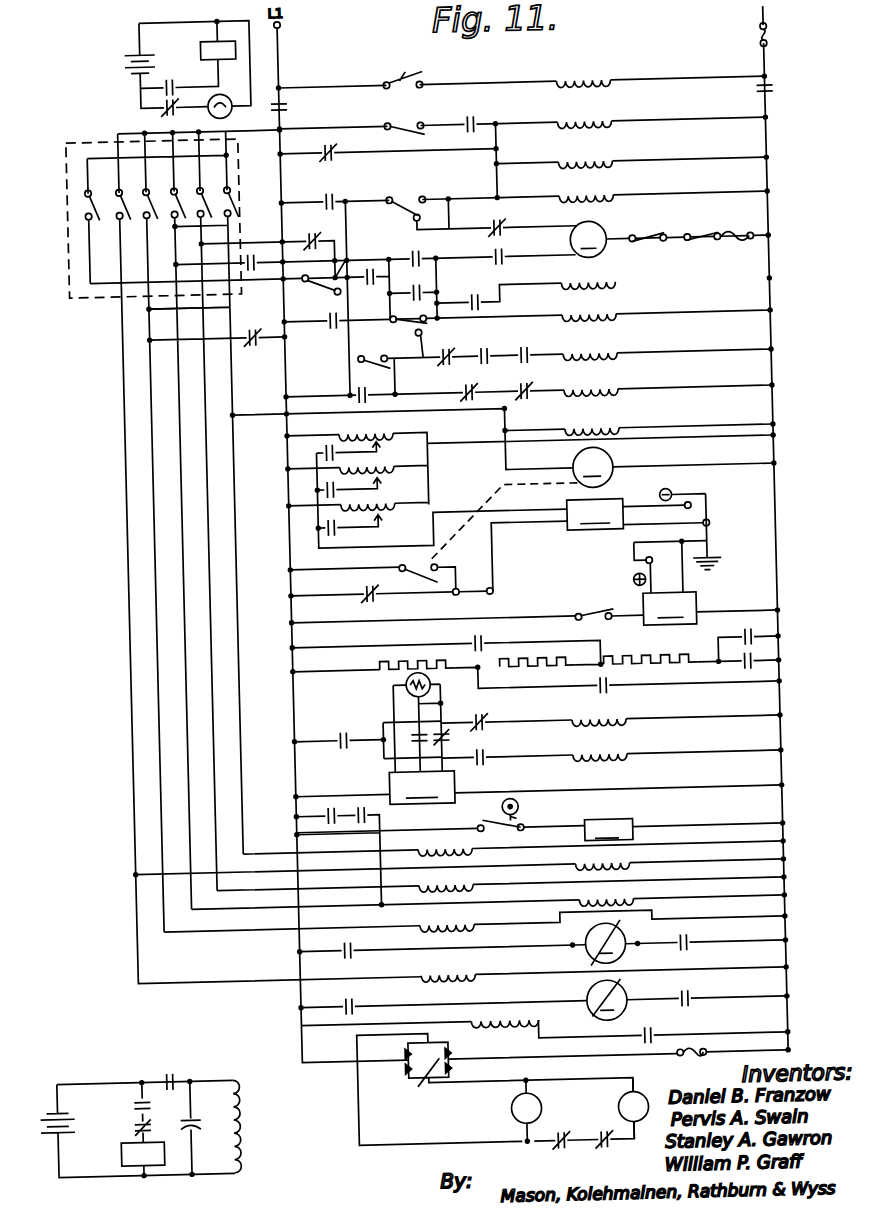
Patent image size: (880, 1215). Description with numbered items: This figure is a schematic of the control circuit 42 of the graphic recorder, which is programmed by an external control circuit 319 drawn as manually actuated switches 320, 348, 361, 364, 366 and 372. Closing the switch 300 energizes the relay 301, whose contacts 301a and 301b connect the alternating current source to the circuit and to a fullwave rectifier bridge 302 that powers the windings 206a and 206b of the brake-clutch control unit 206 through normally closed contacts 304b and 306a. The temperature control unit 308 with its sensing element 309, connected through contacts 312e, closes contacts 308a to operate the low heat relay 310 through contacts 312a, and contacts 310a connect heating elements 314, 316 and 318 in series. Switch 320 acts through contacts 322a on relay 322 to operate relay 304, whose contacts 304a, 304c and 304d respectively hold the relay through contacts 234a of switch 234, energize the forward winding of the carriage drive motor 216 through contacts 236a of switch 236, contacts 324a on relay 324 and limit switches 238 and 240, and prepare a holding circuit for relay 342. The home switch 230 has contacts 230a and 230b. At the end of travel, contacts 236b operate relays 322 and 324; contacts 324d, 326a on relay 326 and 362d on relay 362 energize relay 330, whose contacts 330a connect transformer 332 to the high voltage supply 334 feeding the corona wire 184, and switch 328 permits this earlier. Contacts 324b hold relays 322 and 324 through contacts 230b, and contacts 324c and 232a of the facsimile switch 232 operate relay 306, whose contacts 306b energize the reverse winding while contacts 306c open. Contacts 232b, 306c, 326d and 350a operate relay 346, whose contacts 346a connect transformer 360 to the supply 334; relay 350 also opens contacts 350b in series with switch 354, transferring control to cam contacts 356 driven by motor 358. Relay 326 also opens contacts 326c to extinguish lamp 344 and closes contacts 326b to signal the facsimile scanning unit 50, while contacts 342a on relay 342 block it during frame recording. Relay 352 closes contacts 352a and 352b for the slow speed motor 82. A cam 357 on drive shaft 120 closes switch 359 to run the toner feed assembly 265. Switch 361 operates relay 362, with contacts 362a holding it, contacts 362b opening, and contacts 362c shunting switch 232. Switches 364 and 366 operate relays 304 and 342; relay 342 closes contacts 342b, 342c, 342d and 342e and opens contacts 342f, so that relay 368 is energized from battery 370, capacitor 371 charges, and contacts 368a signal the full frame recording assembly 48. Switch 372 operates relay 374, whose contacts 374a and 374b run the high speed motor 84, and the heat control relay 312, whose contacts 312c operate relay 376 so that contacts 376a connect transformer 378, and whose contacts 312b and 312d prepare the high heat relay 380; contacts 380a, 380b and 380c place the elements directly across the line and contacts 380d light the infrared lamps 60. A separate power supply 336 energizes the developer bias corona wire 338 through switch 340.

The control circuit 42 is at (76, 68).
The normally open contacts 326b is at (169, 79).
The facsimile scanning unit 50 is at (217, 50).
The normally closed contacts 326c is at (161, 106).
The lamp 344 is at (227, 113).
The switch 320 is at (82, 190).
The switch 372 is at (130, 196).
The switch 348 is at (156, 196).
The switch 366 is at (183, 195).
The switch 361 is at (209, 194).
The switch 364 is at (231, 200).
The external control circuit 319 is at (80, 298).
The contacts 342b is at (239, 259).
The normally closed contacts 362b is at (280, 290).
The normally closed contacts 342a is at (245, 344).
The switch 300 is at (416, 82).
The relay 301 is at (585, 85).
The normally open contacts 301a is at (287, 111).
The normally open contacts 301b is at (771, 101).
The switch 234 is at (398, 138).
The normally closed contacts 234a is at (415, 127).
The normally open contacts 304a is at (471, 126).
The control relay 304 is at (567, 129).
The normally closed contacts 322a is at (322, 162).
The relay 322 is at (594, 172).
The normally open contacts 304c is at (310, 197).
The switch 236 is at (392, 202).
The normally open contacts 236b is at (416, 200).
The normally closed contacts 236a is at (409, 219).
The relay 324 is at (595, 203).
The normally closed contacts 324a is at (499, 230).
The carriage drive motor 216 is at (588, 239).
The limit switch 238 is at (627, 246).
The limit switch 240 is at (685, 247).
The normally open contacts 362a is at (316, 226).
The contacts 230b is at (365, 256).
The contacts 342c is at (421, 249).
The normally open contacts 306b is at (496, 260).
The home switch 230 is at (325, 297).
The contacts 230a is at (328, 297).
The normally open contacts 324b is at (374, 269).
The normally open contacts 362c is at (423, 292).
The normally open contacts 312c is at (472, 308).
The relay 376 is at (607, 290).
The normally open contacts 324c is at (324, 330).
The facsimile switch 232 is at (409, 311).
The normally closed contacts 232a is at (424, 325).
The control relay 306 is at (608, 320).
The normally open contacts 232b is at (408, 339).
The switch 328 is at (354, 370).
The normally closed contacts 306c is at (438, 369).
The normally open contacts 326d is at (478, 354).
The normally open contacts 350a is at (519, 354).
The control relay 346 is at (608, 359).
The normally open contacts 324d is at (345, 394).
The normally closed contacts 326a is at (470, 389).
The normally closed contacts 362d is at (517, 404).
The relay 330 is at (608, 395).
The relay 350 is at (610, 436).
The motor 358 is at (673, 465).
The transformer 332 is at (379, 436).
The transformer 360 is at (368, 468).
The transformer 378 is at (369, 505).
The normally open contacts 330a is at (322, 446).
The normally open contacts 346a is at (303, 491).
The normally open contacts 376a is at (324, 534).
The cam driven contacts 356 is at (422, 569).
The normally closed contacts 350b is at (352, 602).
The switch 354 is at (442, 601).
The high voltage power supply 334 is at (635, 513).
The corona wire 184 is at (678, 512).
The corona discharge wire 338 is at (619, 568).
The power supply 336 is at (710, 607).
The switch 340 is at (594, 619).
The resistance element 314 is at (383, 651).
The normally open contacts 380a is at (460, 646).
The resistance element 316 is at (558, 652).
The resistance element 318 is at (650, 647).
The normally open contacts 380b is at (740, 646).
The normally open contacts 310a is at (743, 671).
The normally open contacts 380c is at (586, 699).
The temperature responsive sensing element 309 is at (390, 688).
The normally open contacts 308a is at (337, 734).
The normally open contacts 312d is at (395, 745).
The normally closed contacts 312e is at (434, 745).
The normally closed contacts 312a is at (466, 722).
The normally open contacts 312b is at (469, 768).
The low heat control relay 310 is at (603, 729).
The high heat relay 380 is at (606, 764).
The temperature control unit 308 is at (585, 784).
The contacts 342d is at (277, 803).
The normally open contacts 304d is at (277, 836).
The drive shaft 120 is at (496, 813).
The cam 357 is at (499, 809).
The switch 359 is at (458, 831).
The toner feed assembly 265 is at (684, 828).
The relay 352 is at (453, 855).
The high speed motor control relay 374 is at (609, 873).
The relay 362 is at (450, 892).
The relay 342 is at (617, 905).
The relay 326 is at (452, 930).
The normally open contacts 374a is at (326, 950).
The normally open contacts 374b is at (665, 956).
The fast speed motor 84 is at (605, 943).
The heat control relay 312 is at (452, 979).
The normally open contacts 352a is at (332, 1006).
The normally open contacts 352b is at (666, 1004).
The slow speed drive motor 82 is at (606, 1000).
The infrared lamps 60 is at (473, 1032).
The normally open contacts 380d is at (632, 1044).
The fullwave rectifier bridge 302 is at (392, 1080).
The winding 206b is at (654, 1065).
The winding 206a is at (485, 1120).
The brake-clutch control unit 206 is at (585, 1113).
The normally closed contacts 304b is at (531, 1155).
The normally closed contacts 306a is at (576, 1155).
The battery 370 is at (19, 1091).
The normally open contacts 368a is at (107, 1100).
The contacts 342e is at (148, 1070).
The normally closed contacts 342f is at (105, 1122).
The full frame recording assembly 48 is at (94, 1152).
The capacitor 371 is at (172, 1130).
The relay 368 is at (214, 1120).